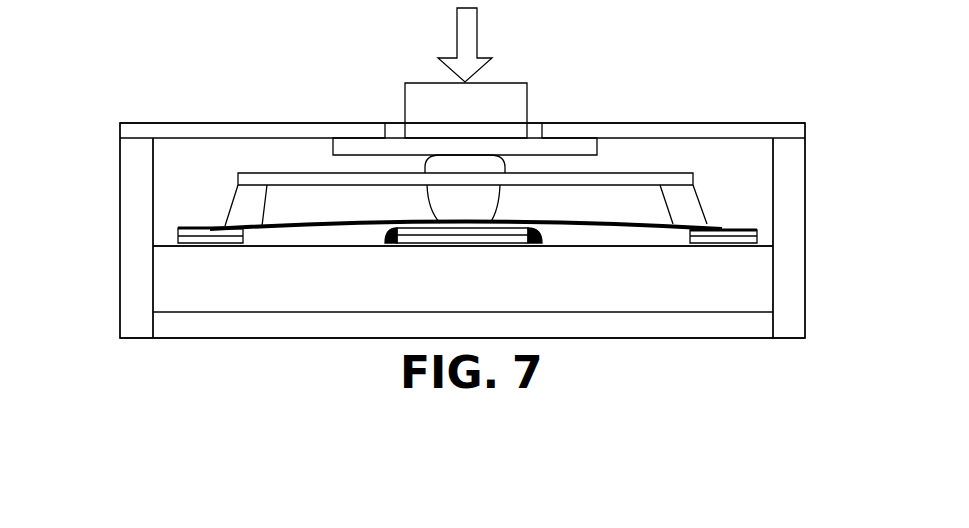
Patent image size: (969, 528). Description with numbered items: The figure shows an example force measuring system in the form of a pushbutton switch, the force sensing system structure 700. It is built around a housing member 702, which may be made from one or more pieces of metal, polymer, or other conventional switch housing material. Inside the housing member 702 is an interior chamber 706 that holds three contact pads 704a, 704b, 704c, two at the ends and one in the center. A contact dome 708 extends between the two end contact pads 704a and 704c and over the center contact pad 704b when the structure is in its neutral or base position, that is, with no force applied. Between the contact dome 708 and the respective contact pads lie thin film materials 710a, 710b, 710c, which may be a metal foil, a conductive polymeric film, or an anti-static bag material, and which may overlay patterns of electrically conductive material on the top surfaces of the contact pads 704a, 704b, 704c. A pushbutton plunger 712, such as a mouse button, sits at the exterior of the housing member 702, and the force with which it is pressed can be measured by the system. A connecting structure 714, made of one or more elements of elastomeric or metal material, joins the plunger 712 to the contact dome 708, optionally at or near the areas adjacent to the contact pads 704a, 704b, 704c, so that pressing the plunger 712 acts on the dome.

The force sensing system structure 700 is at (332, 66).
The housing member 702 is at (118, 119).
The contact pad 704a is at (233, 238).
The contact pad 704b is at (468, 238).
The contact pad 704c is at (708, 240).
The interior chamber 706 is at (742, 179).
The contact dome 708 is at (333, 228).
The thin film material 710a is at (177, 228).
The thin film material 710b is at (530, 220).
The thin film material 710c is at (757, 230).
The pushbutton plunger 712 is at (517, 83).
The connecting structure 714 is at (235, 171).